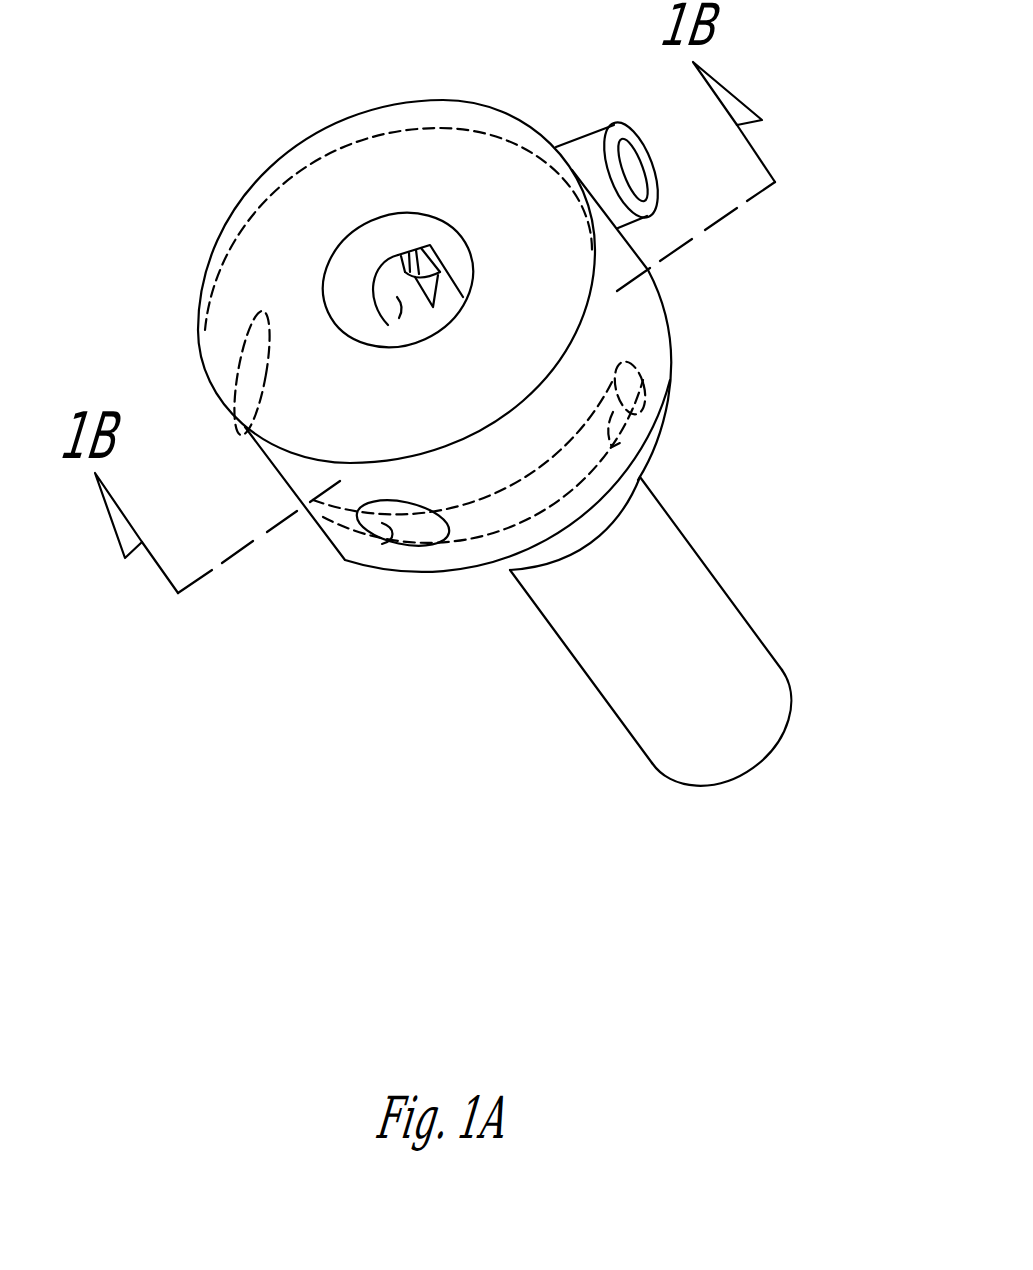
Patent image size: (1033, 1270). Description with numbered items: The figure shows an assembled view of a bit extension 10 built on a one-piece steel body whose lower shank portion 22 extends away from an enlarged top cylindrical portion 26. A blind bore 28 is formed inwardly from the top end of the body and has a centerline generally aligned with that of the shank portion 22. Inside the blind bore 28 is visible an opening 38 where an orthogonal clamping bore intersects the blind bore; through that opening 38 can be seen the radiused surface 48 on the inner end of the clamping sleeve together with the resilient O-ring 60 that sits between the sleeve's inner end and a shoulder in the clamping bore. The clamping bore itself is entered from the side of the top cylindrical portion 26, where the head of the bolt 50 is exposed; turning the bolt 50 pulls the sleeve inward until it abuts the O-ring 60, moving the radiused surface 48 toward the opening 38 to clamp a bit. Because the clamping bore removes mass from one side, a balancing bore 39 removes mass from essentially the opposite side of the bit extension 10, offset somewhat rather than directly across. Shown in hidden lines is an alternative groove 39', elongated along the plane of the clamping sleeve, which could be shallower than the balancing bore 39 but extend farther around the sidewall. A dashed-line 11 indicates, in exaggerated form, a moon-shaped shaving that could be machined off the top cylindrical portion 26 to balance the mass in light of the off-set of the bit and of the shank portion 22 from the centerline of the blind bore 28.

The bit extension 10 is at (178, 136).
The dashed-line 11 is at (335, 158).
The shank portion 22 is at (680, 562).
The top cylindrical portion 26 is at (217, 358).
The blind bore 28 is at (383, 229).
The opening 38 is at (376, 280).
The balancing bore 39 is at (340, 444).
The groove 39' is at (666, 402).
The radiused surface 48 is at (465, 297).
The bolt 50 is at (672, 173).
The O-ring 60 is at (464, 297).